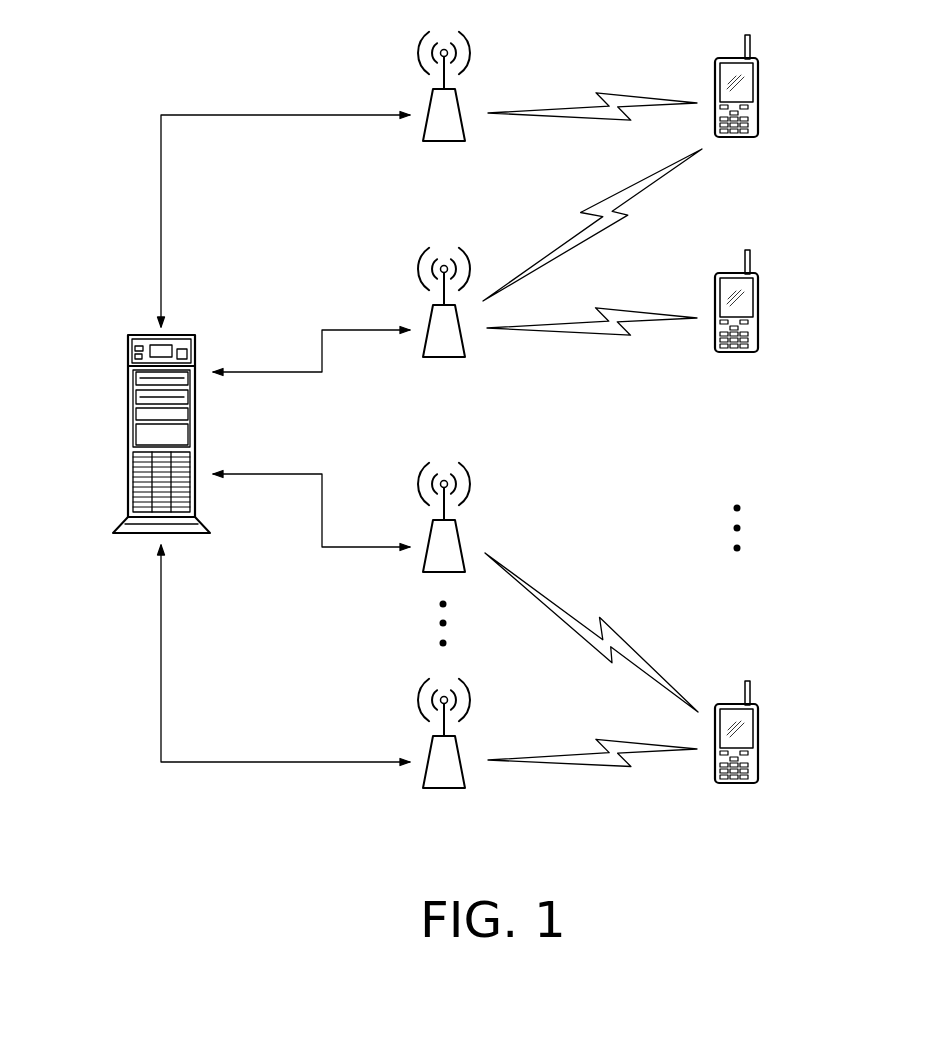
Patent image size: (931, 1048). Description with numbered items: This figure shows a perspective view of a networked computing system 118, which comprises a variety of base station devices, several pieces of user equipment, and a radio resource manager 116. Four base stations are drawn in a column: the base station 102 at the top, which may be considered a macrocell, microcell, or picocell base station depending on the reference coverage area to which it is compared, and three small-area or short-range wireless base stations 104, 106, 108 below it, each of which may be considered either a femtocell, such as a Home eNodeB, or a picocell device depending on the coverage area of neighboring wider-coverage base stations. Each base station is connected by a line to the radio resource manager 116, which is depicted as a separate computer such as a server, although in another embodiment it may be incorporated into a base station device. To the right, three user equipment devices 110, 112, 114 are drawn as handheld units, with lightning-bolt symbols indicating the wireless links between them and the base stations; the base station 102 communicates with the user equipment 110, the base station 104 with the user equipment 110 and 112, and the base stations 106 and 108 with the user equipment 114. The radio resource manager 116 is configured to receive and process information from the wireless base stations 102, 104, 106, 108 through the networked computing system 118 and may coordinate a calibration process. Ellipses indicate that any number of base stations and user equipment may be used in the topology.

The base station 102 is at (423, 128).
The small-area or short-range wireless base station 104 is at (423, 344).
The small-area or short-range wireless base station 106 is at (423, 559).
The small-area or short-range wireless base station 108 is at (423, 774).
The user equipment 110 is at (758, 93).
The user equipment 112 is at (758, 308).
The user equipment 114 is at (758, 740).
The radio resource manager 116 is at (128, 378).
The networked computing system 118 is at (200, 52).